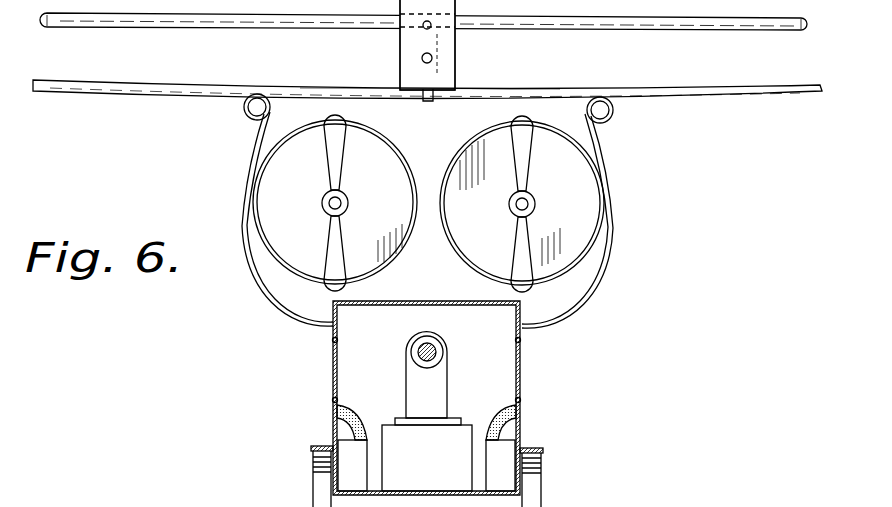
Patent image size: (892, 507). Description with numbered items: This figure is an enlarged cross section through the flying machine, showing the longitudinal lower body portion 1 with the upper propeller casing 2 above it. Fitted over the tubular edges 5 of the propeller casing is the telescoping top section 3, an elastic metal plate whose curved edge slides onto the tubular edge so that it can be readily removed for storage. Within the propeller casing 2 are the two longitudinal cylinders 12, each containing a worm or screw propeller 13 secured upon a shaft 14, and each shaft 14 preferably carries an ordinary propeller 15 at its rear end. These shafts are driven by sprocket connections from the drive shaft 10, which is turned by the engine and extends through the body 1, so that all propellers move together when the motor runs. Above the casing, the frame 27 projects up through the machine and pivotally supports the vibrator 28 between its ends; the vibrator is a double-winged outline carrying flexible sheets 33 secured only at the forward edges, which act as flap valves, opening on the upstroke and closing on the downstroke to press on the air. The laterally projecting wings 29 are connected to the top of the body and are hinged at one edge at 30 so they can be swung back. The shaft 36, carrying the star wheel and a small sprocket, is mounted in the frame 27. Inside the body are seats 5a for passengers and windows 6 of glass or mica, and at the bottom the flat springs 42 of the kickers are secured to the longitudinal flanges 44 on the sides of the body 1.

The lower body portion 1 is at (520, 398).
The propeller casing 2 is at (612, 251).
The telescoping top section 3 is at (343, 90).
The tubular edge 5 is at (245, 111).
The seat 5a is at (342, 426).
The window 6 is at (333, 371).
The shaft 10 is at (441, 355).
The longitudinal cylinder 12 is at (260, 212).
The worm or screw propeller 13 is at (295, 235).
The shaft 14 is at (331, 203).
The propeller 15 is at (330, 153).
The frame 27 is at (443, 37).
The vibrator 28 is at (114, 21).
The wing 29 is at (159, 89).
The hinge 30 is at (428, 88).
The flexible sheet 33 is at (203, 22).
The shaft 36 is at (432, 59).
The flat spring 42 is at (318, 493).
The longitudinal flange 44 is at (318, 448).